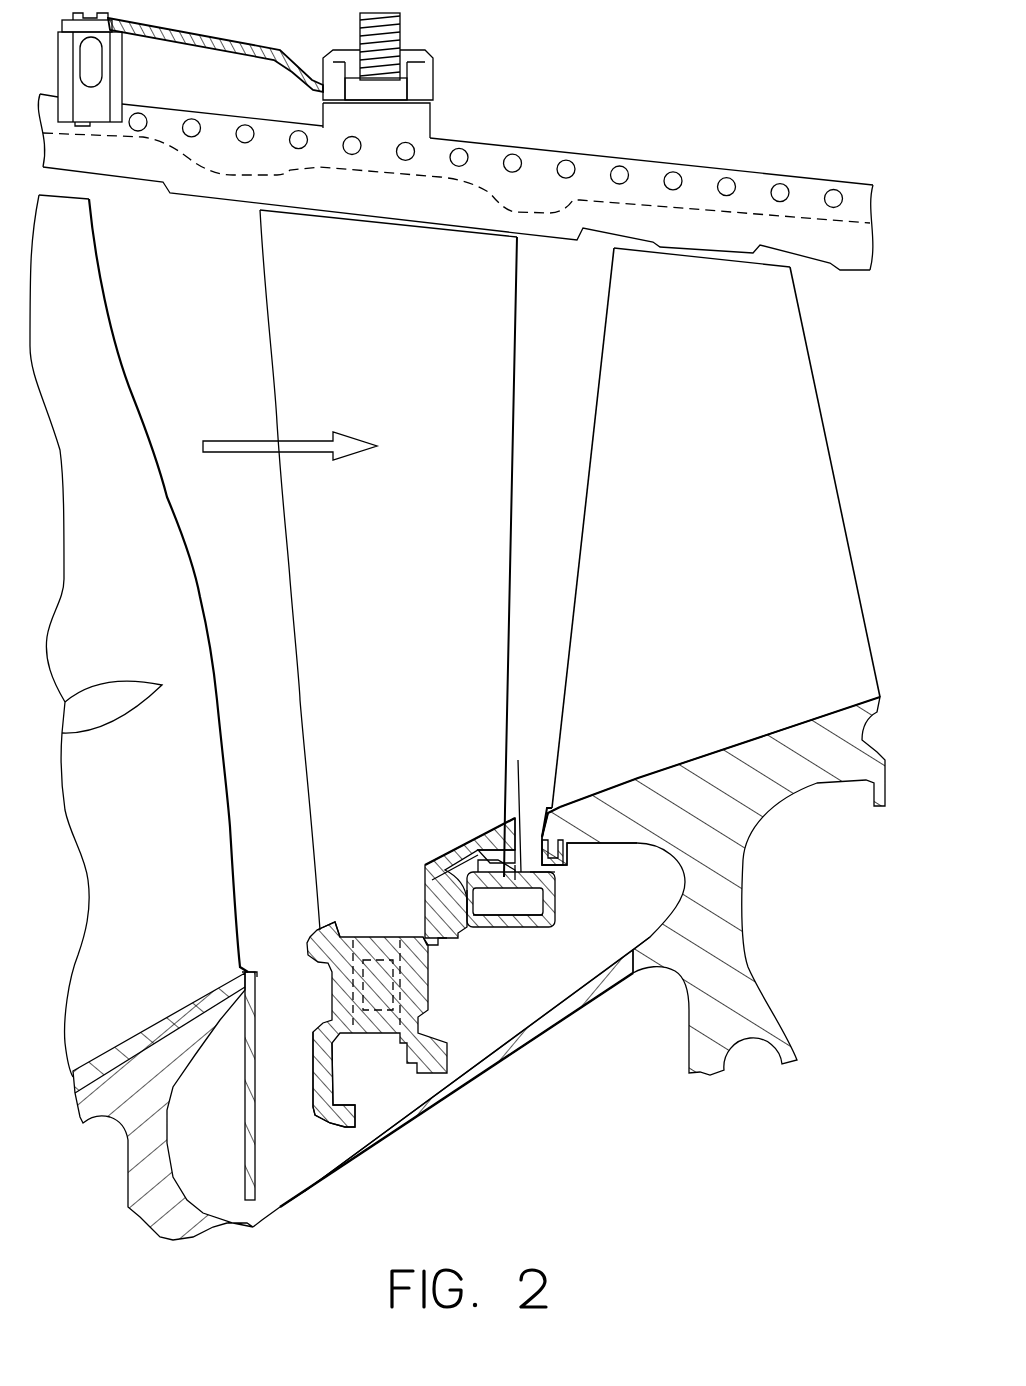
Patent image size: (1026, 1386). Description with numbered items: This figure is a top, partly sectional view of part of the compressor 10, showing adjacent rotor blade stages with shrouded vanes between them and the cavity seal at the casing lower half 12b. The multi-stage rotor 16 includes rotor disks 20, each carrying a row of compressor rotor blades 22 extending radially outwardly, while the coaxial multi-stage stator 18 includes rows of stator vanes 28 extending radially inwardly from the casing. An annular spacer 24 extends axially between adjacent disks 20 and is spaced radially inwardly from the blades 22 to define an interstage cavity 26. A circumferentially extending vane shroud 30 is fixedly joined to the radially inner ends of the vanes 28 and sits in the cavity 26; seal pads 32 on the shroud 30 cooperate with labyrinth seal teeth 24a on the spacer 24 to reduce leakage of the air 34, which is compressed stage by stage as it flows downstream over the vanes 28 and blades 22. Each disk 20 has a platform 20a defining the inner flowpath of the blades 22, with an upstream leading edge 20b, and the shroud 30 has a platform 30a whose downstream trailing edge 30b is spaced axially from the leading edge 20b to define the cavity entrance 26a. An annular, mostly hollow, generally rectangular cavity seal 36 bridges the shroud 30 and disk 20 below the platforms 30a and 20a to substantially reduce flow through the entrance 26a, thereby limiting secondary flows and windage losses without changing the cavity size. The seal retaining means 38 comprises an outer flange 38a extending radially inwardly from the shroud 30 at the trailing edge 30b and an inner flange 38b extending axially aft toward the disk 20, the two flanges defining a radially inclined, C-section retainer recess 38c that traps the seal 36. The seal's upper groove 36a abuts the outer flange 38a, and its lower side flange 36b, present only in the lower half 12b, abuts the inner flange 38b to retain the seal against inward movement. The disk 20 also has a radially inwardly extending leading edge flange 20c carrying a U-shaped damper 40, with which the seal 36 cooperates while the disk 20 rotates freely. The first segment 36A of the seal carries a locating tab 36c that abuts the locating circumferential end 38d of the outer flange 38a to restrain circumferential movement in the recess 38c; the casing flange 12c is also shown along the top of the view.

The compressor 10 is at (512, 107).
The casing lower half 12b is at (540, 227).
The casing flange 12c is at (650, 167).
The multi-stage rotor 16 is at (785, 1003).
The multi-stage stator 18 is at (250, 293).
The rotor disk 20 is at (147, 1197).
The disk platform 20a is at (640, 777).
The leading edge 20b is at (552, 807).
The leading edge flange 20c is at (553, 843).
The compressor rotor blade 22 is at (98, 583).
The annular spacer 24 is at (555, 1030).
The labyrinth seal teeth 24a is at (405, 1108).
The interstage cavity 26 is at (476, 1033).
The cavity entrance 26a is at (526, 865).
The stator vane 28 is at (379, 368).
The vane shroud 30 is at (318, 983).
The shroud platform 30a is at (433, 860).
The trailing edge 30b is at (515, 817).
The seal pad 32 is at (427, 1075).
The air 34 is at (256, 438).
The cavity seal 36 is at (563, 913).
The first segment 36A is at (510, 930).
The upper groove 36a is at (547, 872).
The lower side flange 36b is at (443, 923).
The locating tab 36c is at (487, 855).
The seal retaining means 38 is at (410, 888).
The outer flange 38a is at (520, 877).
The inner flange 38b is at (440, 930).
The retainer recess 38c is at (440, 870).
The locating circumferential end 38d is at (479, 850).
The damper 40 is at (570, 853).